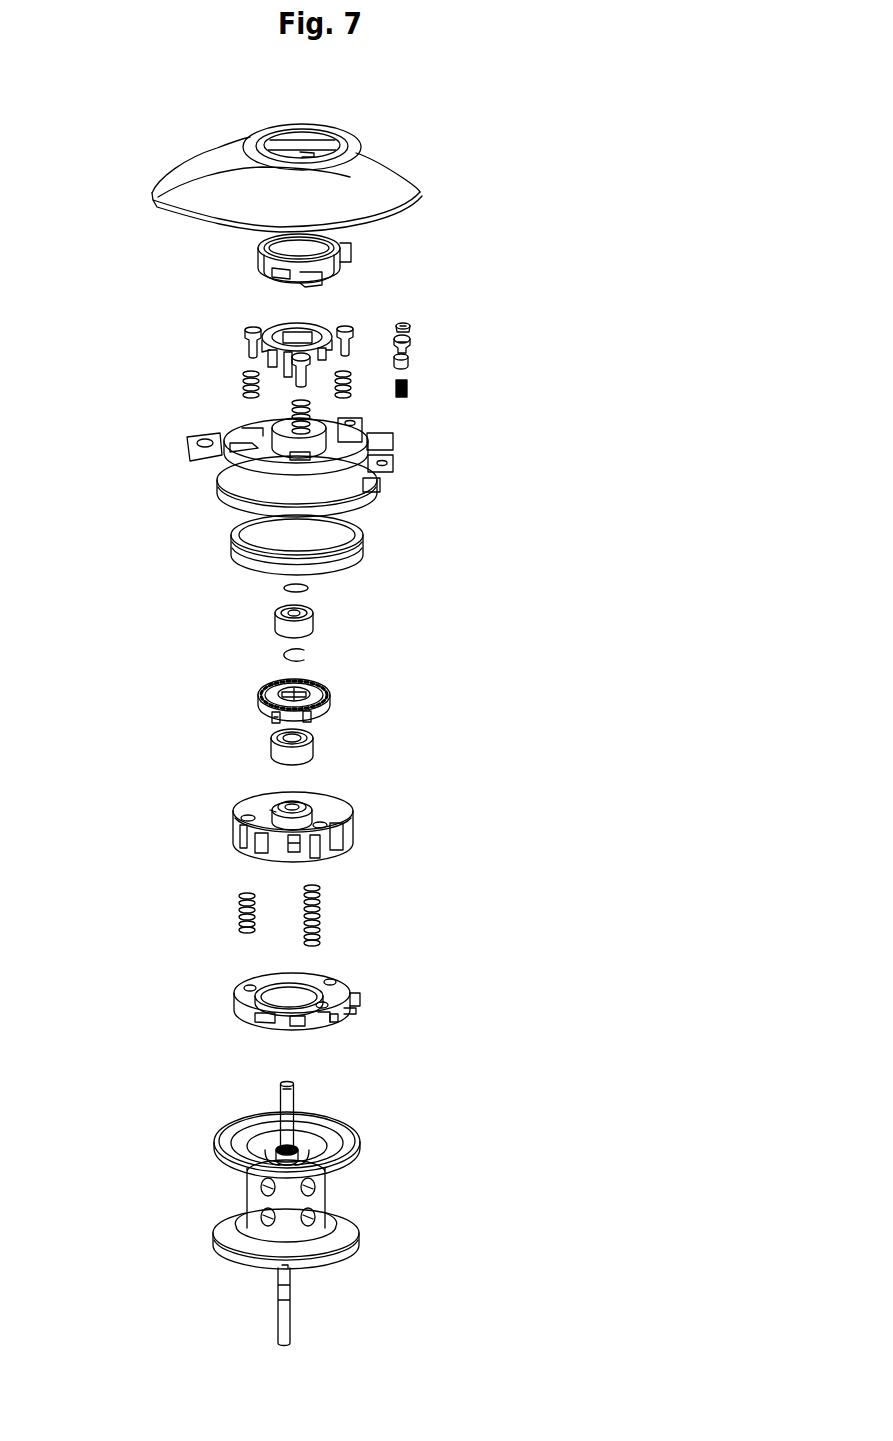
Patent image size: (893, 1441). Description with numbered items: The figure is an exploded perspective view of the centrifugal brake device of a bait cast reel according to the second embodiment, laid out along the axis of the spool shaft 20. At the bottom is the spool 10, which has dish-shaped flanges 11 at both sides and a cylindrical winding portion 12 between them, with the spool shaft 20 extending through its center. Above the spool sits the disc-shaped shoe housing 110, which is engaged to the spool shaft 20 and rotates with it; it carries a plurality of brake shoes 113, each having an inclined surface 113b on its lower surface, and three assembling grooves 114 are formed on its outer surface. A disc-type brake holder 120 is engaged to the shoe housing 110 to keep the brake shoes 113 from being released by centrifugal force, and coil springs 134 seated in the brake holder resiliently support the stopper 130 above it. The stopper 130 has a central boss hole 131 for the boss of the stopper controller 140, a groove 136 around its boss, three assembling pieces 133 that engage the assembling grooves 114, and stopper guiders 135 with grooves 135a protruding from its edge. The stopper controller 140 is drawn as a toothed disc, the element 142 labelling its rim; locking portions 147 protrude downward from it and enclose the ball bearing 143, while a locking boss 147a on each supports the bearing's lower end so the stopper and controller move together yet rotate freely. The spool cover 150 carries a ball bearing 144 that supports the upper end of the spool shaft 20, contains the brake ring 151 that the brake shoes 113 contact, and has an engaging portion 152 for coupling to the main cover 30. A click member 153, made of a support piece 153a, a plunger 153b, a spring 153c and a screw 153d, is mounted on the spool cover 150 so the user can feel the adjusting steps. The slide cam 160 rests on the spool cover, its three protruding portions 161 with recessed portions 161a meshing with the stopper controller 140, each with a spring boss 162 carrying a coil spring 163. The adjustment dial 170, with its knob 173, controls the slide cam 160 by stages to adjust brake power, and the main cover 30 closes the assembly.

The main cover 30 is at (388, 167).
The knob 173 is at (340, 237).
The adjustment dial 170 is at (398, 224).
The slide cam 160 is at (243, 360).
The protruding portion 161 is at (353, 352).
The recessed portion 161a is at (273, 368).
The spring boss 162 is at (248, 348).
The coil spring 163 is at (243, 384).
The click member 153 is at (500, 359).
The support piece 153a is at (409, 340).
The plunger 153b is at (409, 362).
The spring 153c is at (471, 403).
The screw 153d is at (409, 325).
The engaging portion 152 is at (190, 450).
The spool cover 150 is at (237, 487).
The brake ring 151 is at (233, 553).
The ball bearing 144 is at (313, 617).
The stopper controller 140 is at (266, 710).
The gear teeth 142 is at (273, 692).
The locking portion 147 is at (315, 717).
The locking boss 147a is at (273, 727).
The ball bearing 143 is at (315, 757).
The stopper 130 is at (255, 798).
The boss hole 131 is at (310, 790).
The groove 136 is at (277, 808).
The stopper guider 135 is at (240, 818).
The groove 135a is at (277, 843).
The assembling piece 133 is at (325, 850).
The coil spring 134 is at (238, 900).
The shoe housing 110 is at (281, 1012).
The brake holder 120 is at (250, 983).
The brake shoe 113 is at (348, 994).
The inclined surface 113b is at (352, 1003).
The assembling groove 114 is at (333, 1022).
The spool 10 is at (288, 1214).
The spool shaft 20 is at (287, 1090).
The flange 11 is at (225, 1160).
The winding portion 12 is at (253, 1183).